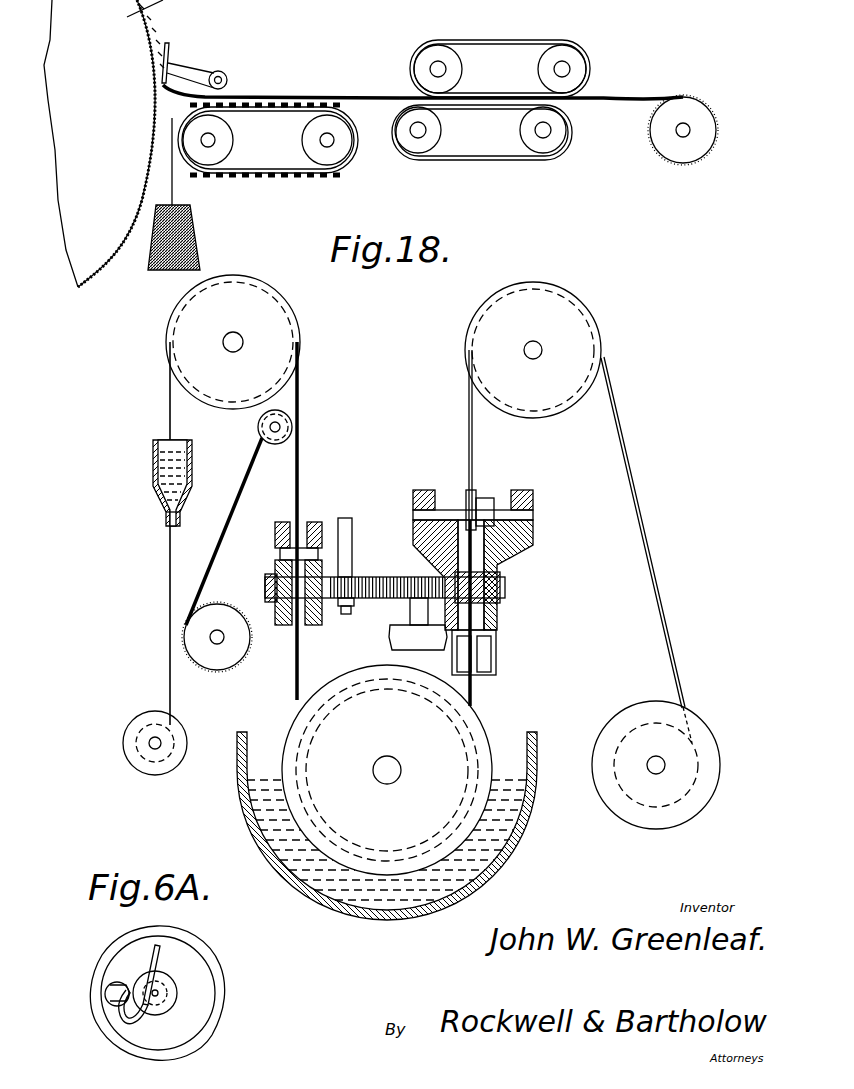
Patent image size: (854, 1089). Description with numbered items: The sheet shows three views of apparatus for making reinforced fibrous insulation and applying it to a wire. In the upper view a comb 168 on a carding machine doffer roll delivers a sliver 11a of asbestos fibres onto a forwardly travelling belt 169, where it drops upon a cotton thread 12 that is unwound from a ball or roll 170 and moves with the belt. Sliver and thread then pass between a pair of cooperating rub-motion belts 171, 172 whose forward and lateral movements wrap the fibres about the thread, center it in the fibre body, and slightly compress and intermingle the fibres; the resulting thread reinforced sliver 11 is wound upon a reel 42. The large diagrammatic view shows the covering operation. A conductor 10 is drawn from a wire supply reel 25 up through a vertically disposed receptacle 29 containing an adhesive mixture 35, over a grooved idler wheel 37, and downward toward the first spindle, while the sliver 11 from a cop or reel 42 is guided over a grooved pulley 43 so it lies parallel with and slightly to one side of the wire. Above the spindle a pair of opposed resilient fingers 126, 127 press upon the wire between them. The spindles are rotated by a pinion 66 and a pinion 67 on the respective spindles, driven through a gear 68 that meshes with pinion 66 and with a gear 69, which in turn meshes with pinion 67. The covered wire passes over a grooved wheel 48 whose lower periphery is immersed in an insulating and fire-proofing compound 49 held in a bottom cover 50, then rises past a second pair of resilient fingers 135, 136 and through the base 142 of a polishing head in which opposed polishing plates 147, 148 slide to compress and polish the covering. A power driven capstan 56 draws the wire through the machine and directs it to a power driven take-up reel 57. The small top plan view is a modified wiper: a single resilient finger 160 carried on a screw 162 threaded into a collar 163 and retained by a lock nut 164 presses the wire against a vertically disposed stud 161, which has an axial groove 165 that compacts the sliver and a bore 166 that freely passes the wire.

In FIG. 17, the comb 168 is at (190, 72).
In FIG. 17, the sliver of asbestos fibres 11a is at (215, 98).
In FIG. 17, the thread reinforced sliver 11 is at (627, 96).
In FIG. 18, the thread reinforced sliver 11 is at (240, 500).
In FIG. 17, the belt 169 is at (296, 120).
In FIG. 17, the rub-motion belt 171 is at (492, 95).
In FIG. 17, the rub-motion belt 172 is at (482, 132).
In FIG. 17, the reel 42 is at (705, 120).
In FIG. 18, the reel 42 is at (221, 655).
In FIG. 17, the thread 12 is at (175, 188).
In FIG. 17, the ball or roll 170 is at (200, 240).
In FIG. 18, the grooved idler wheel 37 is at (182, 337).
In FIG. 18, the power driven capstan 56 is at (580, 336).
In FIG. 18, the grooved pulley 43 is at (258, 428).
In FIG. 18, the conductor 10 is at (170, 572).
In FIG. 18, the receptacle 29 is at (155, 468).
In FIG. 18, the adhesive mixture 35 is at (166, 490).
In FIG. 18, the wire supply reel 25 is at (134, 730).
In FIG. 18, the resilient finger 126 is at (282, 532).
In FIG. 18, the resilient finger 127 is at (312, 530).
In FIG. 18, the pinion 66 is at (268, 588).
In FIG. 18, the gear 68 is at (360, 577).
In FIG. 18, the pinion 67 is at (505, 588).
In FIG. 18, the gear 69 is at (410, 603).
In FIG. 18, the base of polishing head 142 is at (535, 556).
In FIG. 18, the polishing plate 148 is at (465, 502).
In FIG. 18, the polishing plate 147 is at (486, 500).
In FIG. 18, the resilient finger 135 is at (493, 662).
In FIG. 18, the resilient finger 136 is at (460, 660).
In FIG. 18, the bottom cover 50 is at (237, 768).
In FIG. 18, the insulating and fire-proofing compound 49 is at (270, 808).
In FIG. 18, the grooved wheel 48 is at (388, 731).
In FIG. 18, the take-up reel 57 is at (705, 741).
In FIG. 6A, the collar 163 is at (130, 955).
In FIG. 6A, the groove 165 is at (165, 993).
In FIG. 6A, the bore 166 is at (166, 985).
In FIG. 6A, the resilient finger 160 is at (160, 948).
In FIG. 6A, the stud 161 is at (165, 1005).
In FIG. 6A, the lock nut 164 is at (106, 986).
In FIG. 6A, the screw 162 is at (112, 995).